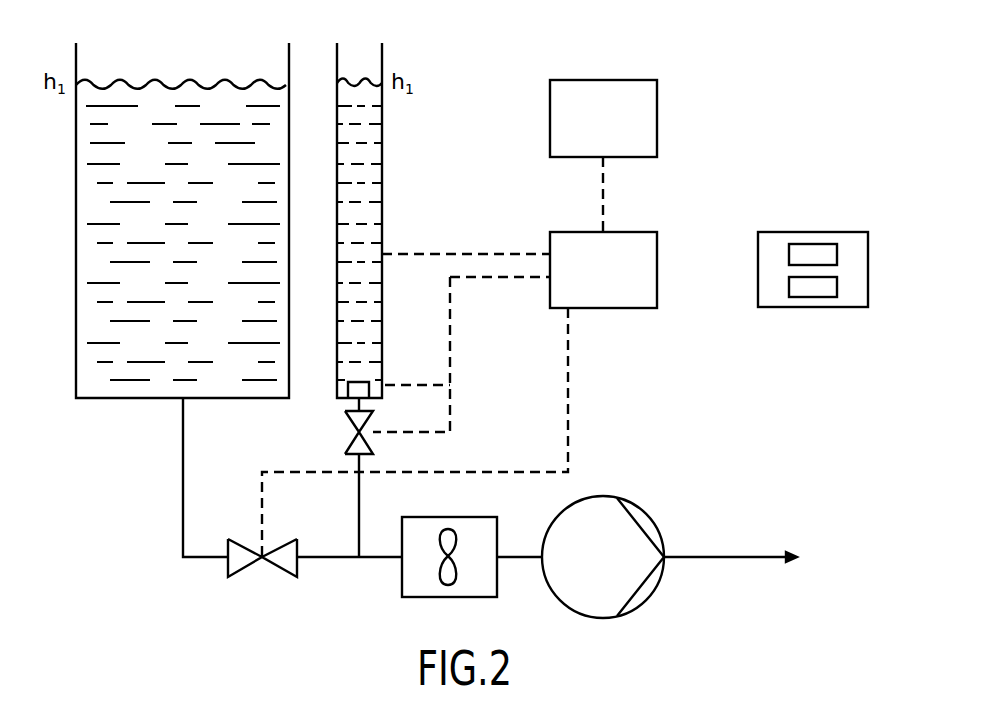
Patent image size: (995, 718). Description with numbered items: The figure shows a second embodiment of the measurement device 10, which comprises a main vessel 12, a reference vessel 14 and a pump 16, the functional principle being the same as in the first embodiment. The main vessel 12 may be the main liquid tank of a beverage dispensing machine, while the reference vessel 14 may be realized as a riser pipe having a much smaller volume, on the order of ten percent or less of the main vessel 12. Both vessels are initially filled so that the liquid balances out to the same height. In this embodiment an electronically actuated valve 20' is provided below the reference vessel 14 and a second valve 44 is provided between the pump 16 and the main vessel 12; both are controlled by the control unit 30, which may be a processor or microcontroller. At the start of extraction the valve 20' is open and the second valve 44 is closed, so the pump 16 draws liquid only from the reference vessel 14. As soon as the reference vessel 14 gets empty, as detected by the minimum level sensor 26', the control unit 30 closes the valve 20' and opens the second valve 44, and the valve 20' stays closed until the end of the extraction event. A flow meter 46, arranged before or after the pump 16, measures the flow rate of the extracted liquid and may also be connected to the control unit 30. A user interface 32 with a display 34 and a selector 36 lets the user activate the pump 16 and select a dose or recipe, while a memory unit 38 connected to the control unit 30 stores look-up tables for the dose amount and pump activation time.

The measurement device 10 is at (787, 127).
The main vessel 12 is at (93, 399).
The reference vessel 14 is at (382, 158).
The pump 16 is at (658, 586).
The valve 20' is at (328, 477).
The minimum level sensor 26' is at (387, 367).
The control unit 30 is at (637, 242).
The user interface 32 is at (782, 240).
The display 34 is at (810, 255).
The selector 36 is at (810, 290).
The memory unit 38 is at (617, 92).
The second valve 44 is at (245, 568).
The flow meter 46 is at (402, 573).